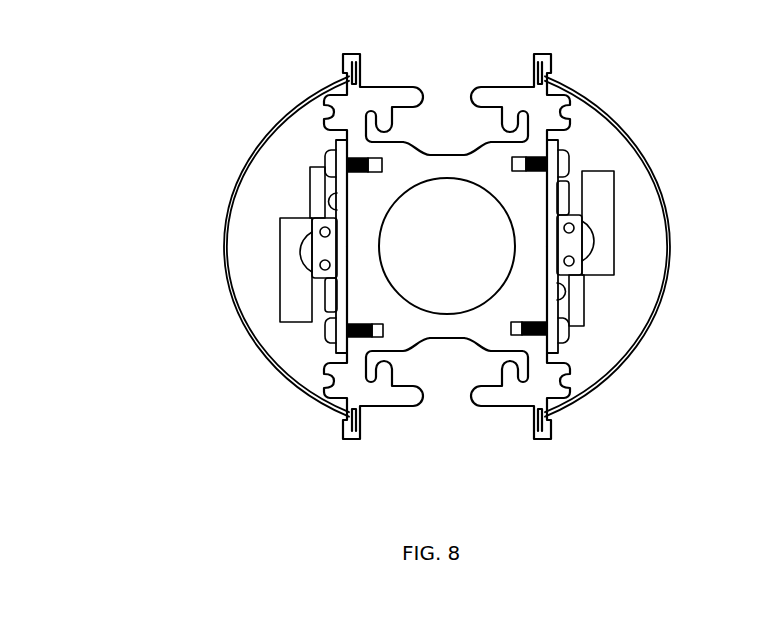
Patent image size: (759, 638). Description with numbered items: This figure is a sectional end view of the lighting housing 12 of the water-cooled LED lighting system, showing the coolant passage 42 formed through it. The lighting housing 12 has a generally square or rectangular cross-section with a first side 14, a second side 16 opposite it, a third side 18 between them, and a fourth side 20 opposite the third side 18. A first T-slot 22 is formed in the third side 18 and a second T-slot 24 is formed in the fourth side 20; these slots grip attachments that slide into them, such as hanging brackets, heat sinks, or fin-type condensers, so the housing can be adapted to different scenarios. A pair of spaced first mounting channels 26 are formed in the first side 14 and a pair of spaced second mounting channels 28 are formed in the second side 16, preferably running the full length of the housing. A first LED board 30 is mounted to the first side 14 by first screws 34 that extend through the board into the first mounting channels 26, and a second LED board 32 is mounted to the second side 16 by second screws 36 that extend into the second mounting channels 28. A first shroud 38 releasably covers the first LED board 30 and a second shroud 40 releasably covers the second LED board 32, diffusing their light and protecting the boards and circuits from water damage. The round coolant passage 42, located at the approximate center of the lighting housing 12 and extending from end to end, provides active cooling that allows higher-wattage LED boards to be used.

The lighting housing 12 is at (393, 403).
The first side 14 is at (342, 265).
The second side 16 is at (550, 247).
The third side 18 is at (468, 343).
The fourth side 20 is at (475, 142).
The first T-slot 22 is at (443, 352).
The second T-slot 24 is at (431, 137).
The first mounting channels 26 is at (384, 166).
The second mounting channels 28 is at (508, 166).
The first LED board 30 is at (317, 290).
The second LED board 32 is at (575, 296).
The first screws 34 is at (323, 336).
The second screws 36 is at (569, 335).
The first shroud 38 is at (233, 185).
The second shroud 40 is at (657, 149).
The coolant passage 42 is at (436, 252).